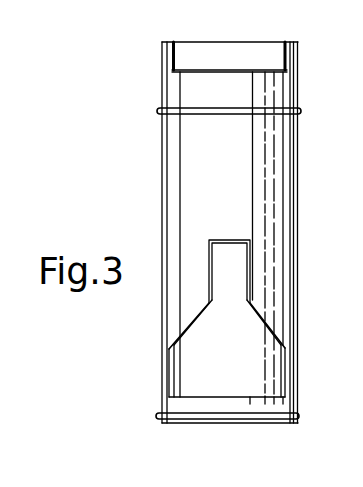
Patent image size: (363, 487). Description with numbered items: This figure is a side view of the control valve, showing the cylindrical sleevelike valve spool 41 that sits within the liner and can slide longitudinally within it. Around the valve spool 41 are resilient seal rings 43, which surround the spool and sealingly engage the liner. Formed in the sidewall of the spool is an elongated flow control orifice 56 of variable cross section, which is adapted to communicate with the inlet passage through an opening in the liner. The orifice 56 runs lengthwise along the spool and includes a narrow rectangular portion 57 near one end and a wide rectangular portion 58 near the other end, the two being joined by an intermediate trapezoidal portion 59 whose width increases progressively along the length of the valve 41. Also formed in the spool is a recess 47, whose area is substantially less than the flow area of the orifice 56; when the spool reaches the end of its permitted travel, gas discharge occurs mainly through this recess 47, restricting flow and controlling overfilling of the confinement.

The valve spool 41 is at (188, 175).
The resilient seal ring 43 is at (279, 108).
The recess 47 is at (285, 53).
The flow control orifice 56 is at (166, 373).
The central projection 57 is at (250, 259).
The wide rectangular portion 58 is at (282, 362).
The intermediate trapezoidal portion 59 is at (190, 323).